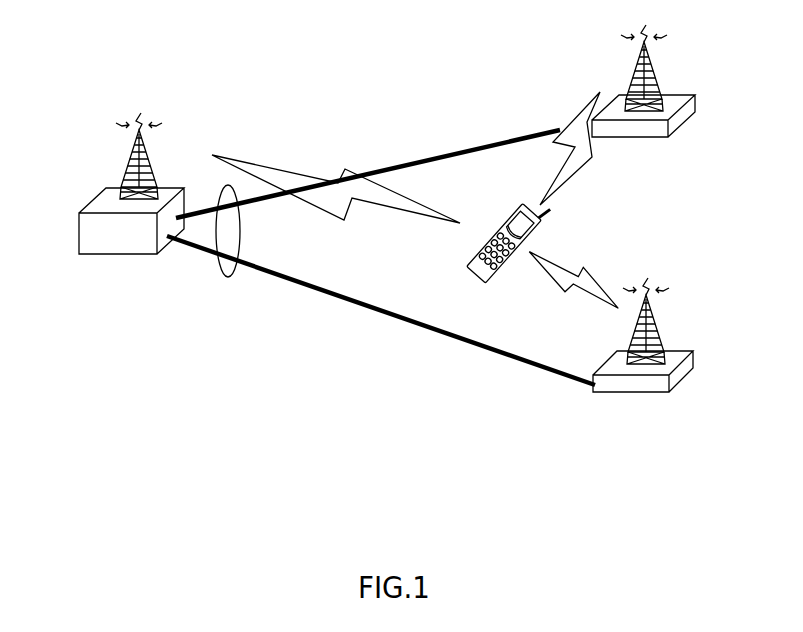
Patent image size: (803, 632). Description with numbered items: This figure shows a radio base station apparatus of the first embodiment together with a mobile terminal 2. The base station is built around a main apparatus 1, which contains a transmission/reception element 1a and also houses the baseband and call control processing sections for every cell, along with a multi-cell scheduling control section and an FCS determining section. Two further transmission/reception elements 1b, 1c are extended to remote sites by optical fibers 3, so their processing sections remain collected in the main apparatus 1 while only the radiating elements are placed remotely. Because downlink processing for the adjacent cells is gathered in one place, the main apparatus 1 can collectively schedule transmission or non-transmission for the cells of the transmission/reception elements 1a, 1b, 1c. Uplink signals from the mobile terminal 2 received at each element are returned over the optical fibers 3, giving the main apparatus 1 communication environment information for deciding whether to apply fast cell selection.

The main apparatus 1 is at (122, 243).
The transmission/reception element 1a is at (126, 166).
The transmission/reception element 1b is at (657, 75).
The transmission/reception element 1c is at (660, 334).
The mobile terminal 2 is at (540, 233).
The optical fibers 3 is at (458, 148).